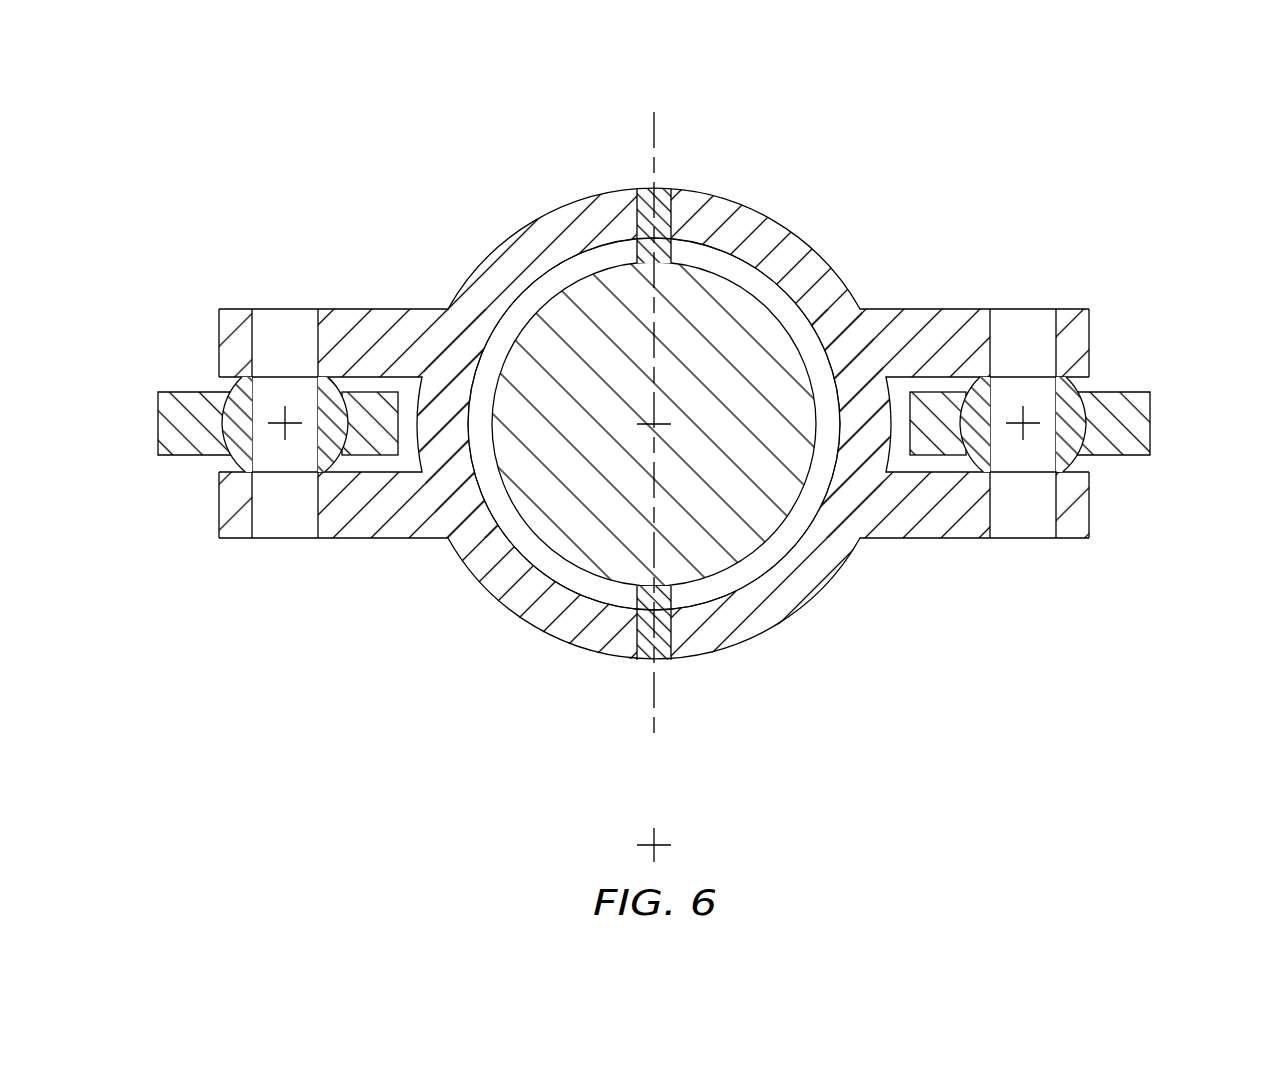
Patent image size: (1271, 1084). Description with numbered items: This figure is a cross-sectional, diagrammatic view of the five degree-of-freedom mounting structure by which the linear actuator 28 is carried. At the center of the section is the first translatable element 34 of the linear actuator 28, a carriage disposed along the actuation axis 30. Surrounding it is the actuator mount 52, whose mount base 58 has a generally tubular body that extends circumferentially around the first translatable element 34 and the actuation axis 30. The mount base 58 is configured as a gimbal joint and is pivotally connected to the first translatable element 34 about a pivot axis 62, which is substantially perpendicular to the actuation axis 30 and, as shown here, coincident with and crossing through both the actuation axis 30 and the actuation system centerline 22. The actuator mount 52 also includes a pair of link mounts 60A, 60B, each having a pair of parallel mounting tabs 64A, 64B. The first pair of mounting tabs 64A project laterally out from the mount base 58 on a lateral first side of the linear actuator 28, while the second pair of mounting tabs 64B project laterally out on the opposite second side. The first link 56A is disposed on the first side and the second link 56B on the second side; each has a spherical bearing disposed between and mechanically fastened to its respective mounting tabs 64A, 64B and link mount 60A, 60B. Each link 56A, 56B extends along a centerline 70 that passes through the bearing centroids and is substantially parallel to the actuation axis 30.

The actuation system centerline 22 is at (657, 843).
The linear actuator 28 is at (755, 559).
The actuation axis 30 is at (660, 425).
The first translatable element 34 is at (524, 552).
The actuator mount 52 is at (654, 387).
The first link 56A is at (141, 452).
The second link 56B is at (1167, 455).
The mount base 58 is at (840, 261).
The first link mount 60A is at (209, 423).
The second link mount 60B is at (1092, 399).
The pivot axis 62 is at (648, 132).
The first pair of mounting tabs 64A is at (218, 322).
The second pair of mounting tabs 64B is at (1090, 348).
The centerline 70 is at (285, 423).